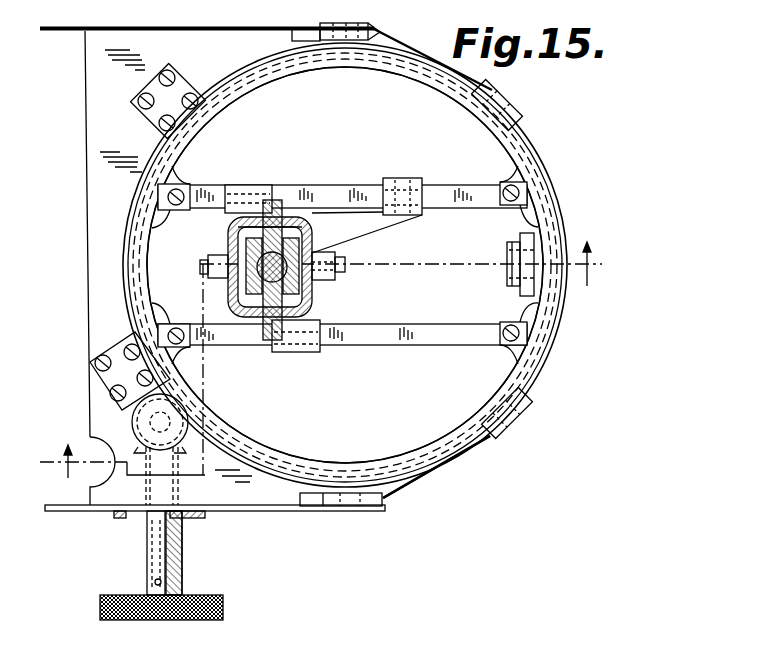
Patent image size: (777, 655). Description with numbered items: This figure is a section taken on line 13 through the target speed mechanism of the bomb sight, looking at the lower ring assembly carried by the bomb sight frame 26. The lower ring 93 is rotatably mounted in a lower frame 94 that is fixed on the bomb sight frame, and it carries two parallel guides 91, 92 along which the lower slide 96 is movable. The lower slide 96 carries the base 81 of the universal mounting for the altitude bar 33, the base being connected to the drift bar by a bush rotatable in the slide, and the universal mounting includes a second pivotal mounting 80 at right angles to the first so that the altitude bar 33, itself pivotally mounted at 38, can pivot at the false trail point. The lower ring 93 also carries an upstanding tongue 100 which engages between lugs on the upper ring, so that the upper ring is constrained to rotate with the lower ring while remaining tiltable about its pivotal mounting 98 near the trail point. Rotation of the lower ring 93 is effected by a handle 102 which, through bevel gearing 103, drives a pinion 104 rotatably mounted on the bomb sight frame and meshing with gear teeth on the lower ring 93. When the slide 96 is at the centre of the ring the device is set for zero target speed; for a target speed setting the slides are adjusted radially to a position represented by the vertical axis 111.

The section line 13 is at (320, 372).
The bomb sight frame 26 is at (267, 52).
The altitude bar 33 is at (255, 278).
The pivotal mounting of altitude bar 38 is at (272, 318).
The pivotal mounting 80 is at (228, 248).
The base 81 is at (240, 222).
The guide 91 is at (418, 346).
The guide 92 is at (456, 184).
The lower ring 93 is at (530, 371).
The lower frame 94 is at (463, 453).
The lower slide 96 is at (372, 234).
The pivotal mounting of upper ring 98 is at (353, 68).
The upstanding tongue 100 is at (505, 253).
The handle 102 is at (225, 597).
The bevel gearing 103 is at (190, 452).
The pinion 104 is at (190, 418).
The vertical axis 111 is at (322, 283).